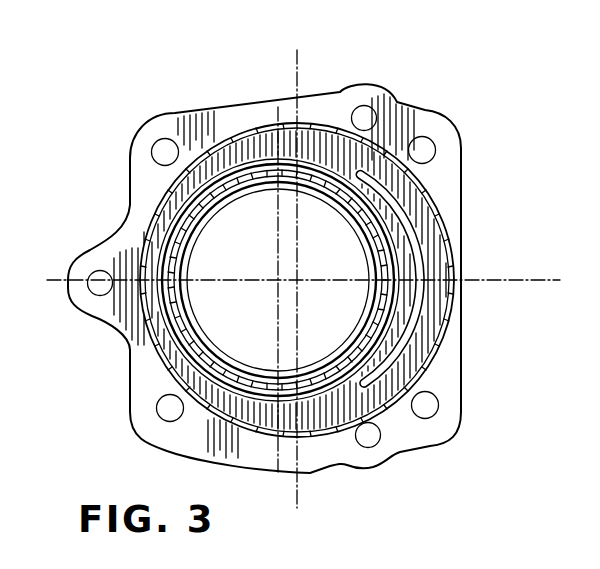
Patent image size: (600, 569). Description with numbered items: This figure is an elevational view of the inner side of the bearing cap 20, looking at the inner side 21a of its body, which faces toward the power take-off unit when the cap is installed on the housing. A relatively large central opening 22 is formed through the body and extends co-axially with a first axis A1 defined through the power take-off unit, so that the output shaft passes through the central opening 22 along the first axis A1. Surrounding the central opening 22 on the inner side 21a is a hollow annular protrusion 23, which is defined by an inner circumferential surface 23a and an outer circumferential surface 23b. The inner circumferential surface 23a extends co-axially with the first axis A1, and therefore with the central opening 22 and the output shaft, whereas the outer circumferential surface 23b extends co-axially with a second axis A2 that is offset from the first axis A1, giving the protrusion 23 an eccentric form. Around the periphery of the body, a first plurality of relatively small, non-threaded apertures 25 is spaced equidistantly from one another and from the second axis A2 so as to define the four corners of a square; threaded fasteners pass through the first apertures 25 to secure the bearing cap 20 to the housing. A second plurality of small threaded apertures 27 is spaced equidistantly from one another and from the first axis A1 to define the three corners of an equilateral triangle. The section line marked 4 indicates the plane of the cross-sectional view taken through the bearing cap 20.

The bearing cap 20 is at (146, 90).
The inner side 21a is at (208, 124).
The central opening 22 is at (250, 190).
The hollow annular protrusion 23 is at (333, 132).
The inner circumferential surface 23a is at (383, 247).
The outer circumferential surface 23b is at (430, 205).
The first apertures 25 is at (157, 148).
The second apertures 27 is at (98, 290).
The first axis A1 is at (276, 283).
The second axis A2 is at (299, 283).
The section line 4- 4 is at (336, 57).